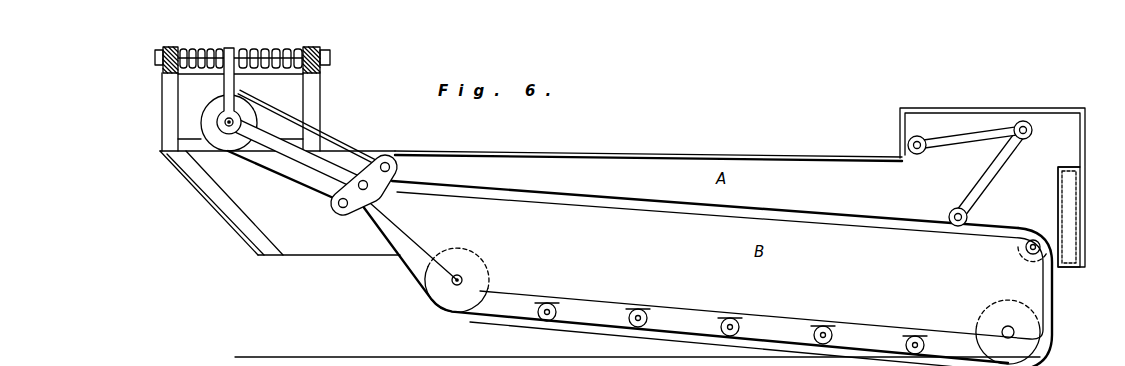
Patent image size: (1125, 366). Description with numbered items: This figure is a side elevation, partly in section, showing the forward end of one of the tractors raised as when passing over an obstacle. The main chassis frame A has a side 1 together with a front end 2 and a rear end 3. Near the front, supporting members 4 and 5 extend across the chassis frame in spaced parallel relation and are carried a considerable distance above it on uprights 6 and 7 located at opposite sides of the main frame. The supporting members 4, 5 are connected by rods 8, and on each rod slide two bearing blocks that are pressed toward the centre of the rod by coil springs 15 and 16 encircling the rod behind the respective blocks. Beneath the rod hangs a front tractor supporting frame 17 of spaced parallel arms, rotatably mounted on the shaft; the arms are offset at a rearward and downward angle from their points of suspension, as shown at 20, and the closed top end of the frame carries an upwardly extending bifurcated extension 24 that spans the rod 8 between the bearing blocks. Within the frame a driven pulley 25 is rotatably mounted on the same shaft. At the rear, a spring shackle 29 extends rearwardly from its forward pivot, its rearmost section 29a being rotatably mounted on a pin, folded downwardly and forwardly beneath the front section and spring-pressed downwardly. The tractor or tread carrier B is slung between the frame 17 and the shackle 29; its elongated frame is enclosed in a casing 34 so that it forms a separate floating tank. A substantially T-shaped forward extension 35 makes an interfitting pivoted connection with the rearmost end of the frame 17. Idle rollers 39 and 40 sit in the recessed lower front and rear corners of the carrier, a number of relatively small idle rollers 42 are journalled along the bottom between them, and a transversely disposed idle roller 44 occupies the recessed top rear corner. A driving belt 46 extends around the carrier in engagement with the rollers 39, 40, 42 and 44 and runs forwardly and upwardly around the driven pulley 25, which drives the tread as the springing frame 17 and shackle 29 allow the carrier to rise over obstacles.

The side 1 is at (641, 156).
The front end 2 is at (210, 200).
The rear end 3 is at (1086, 203).
The supporting member 4 is at (168, 48).
The supporting member 5 is at (316, 52).
The upright 6 is at (162, 88).
The upright 7 is at (320, 97).
The rod 8 is at (283, 52).
The coil spring 15 is at (200, 50).
The coil spring 16 is at (271, 49).
The front tractor supporting frame 17 is at (226, 107).
The offset portion of frame arms 20 is at (267, 150).
The bifurcated extension 24 is at (237, 83).
The driven pulley 25 is at (210, 123).
The spring shackle 29 is at (955, 146).
The rearmost section of shackle 29a is at (990, 188).
The casing 34 is at (1044, 290).
The forward extension 35 is at (367, 208).
The idle roller 39 is at (433, 284).
The idle roller 40 is at (1036, 338).
The small idle roller 42 is at (540, 322).
The idle roller 44 is at (1029, 238).
The driving belt 46 is at (792, 209).